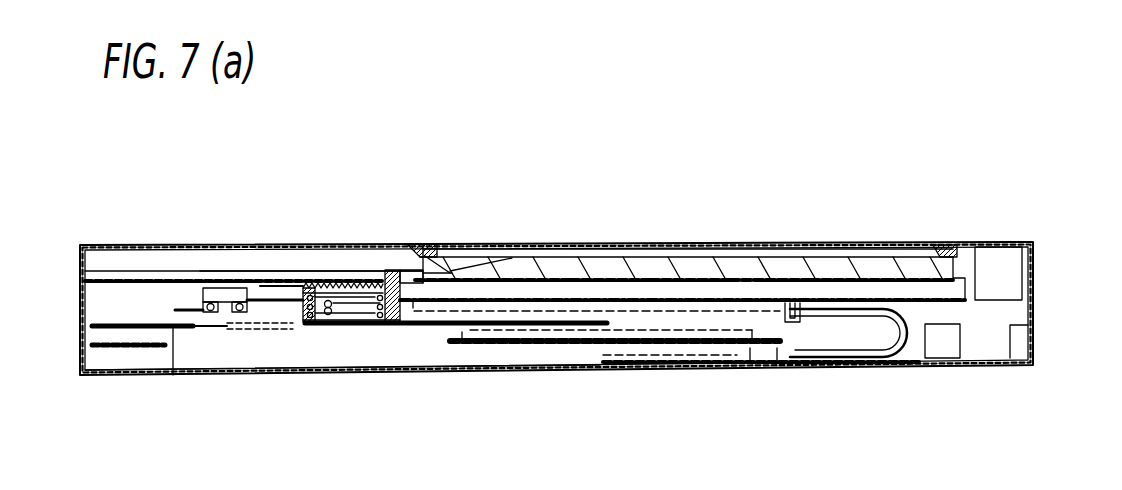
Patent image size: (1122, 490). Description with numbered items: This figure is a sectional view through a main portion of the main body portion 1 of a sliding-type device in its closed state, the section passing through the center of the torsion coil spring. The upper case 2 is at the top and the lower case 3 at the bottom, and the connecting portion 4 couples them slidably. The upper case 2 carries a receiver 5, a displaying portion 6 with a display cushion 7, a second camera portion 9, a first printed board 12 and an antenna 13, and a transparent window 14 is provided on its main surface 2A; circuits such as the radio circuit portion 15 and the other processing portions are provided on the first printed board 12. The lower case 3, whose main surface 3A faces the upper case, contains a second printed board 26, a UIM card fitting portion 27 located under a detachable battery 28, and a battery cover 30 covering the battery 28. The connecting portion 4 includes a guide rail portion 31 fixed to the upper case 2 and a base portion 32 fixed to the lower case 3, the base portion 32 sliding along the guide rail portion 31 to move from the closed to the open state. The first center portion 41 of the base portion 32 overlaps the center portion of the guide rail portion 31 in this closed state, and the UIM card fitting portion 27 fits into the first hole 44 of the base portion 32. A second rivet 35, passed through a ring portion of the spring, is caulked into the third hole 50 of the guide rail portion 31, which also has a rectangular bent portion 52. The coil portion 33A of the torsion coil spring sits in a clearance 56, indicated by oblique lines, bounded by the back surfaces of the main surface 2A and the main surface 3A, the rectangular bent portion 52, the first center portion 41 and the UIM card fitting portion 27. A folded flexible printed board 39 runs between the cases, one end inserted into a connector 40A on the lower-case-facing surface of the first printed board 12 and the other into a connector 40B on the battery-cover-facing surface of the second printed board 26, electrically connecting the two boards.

The main body portion 1 is at (1036, 253).
The upper case 2 is at (325, 271).
The main surface 2A is at (300, 280).
The lower case 3 is at (118, 363).
The main surface 3A is at (118, 271).
The connecting portion 4 is at (537, 320).
The receiver 5 is at (995, 254).
The displaying portion 6 is at (507, 257).
The display cushion 7 is at (937, 246).
The second camera portion 9 is at (943, 350).
The first printed board 12 is at (913, 298).
The antenna 13 is at (1033, 330).
The transparent window 14 is at (826, 247).
The radio circuit portion 15 is at (662, 283).
The second printed board 26 is at (637, 347).
The UIM card fitting portion 27 is at (251, 298).
The battery 28 is at (265, 357).
The battery cover 30 is at (338, 376).
The guide rail portion 31 is at (447, 272).
The base portion 32 is at (376, 325).
The coil portion 33A is at (398, 270).
The second rivet 35 is at (188, 300).
The flexible printed board 39 is at (885, 360).
The connector 40A is at (806, 352).
The connector 40B is at (757, 348).
The first center portion 41 is at (345, 293).
The first hole 44 is at (283, 327).
The third hole 50 is at (220, 330).
The rectangular bent portion 52 is at (455, 272).
The clearance 56 is at (353, 283).